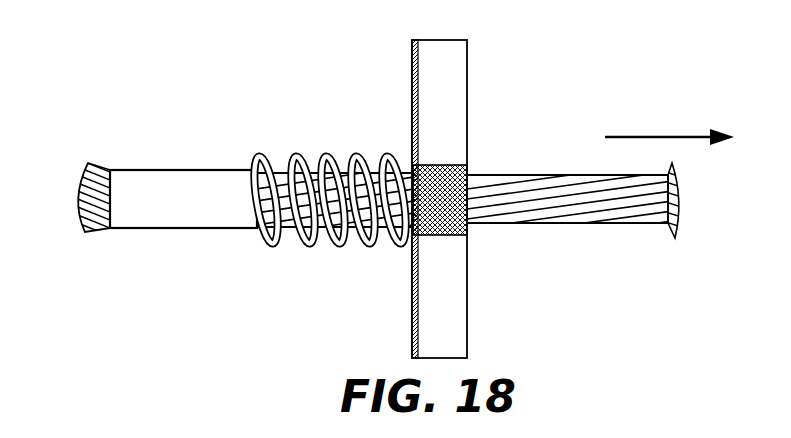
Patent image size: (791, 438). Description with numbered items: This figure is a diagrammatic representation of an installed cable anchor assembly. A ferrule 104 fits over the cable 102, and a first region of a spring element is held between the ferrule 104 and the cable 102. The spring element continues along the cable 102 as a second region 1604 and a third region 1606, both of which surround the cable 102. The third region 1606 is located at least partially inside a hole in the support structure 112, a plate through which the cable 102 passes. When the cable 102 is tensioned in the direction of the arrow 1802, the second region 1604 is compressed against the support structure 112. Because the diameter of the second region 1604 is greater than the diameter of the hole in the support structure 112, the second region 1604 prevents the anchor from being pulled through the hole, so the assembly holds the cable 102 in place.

The cable 102 is at (572, 223).
The ferrule 104 is at (133, 168).
The support structure 112 is at (412, 62).
The second region 1604 is at (276, 160).
The third region 1606 is at (468, 167).
The arrow 1802 is at (648, 137).